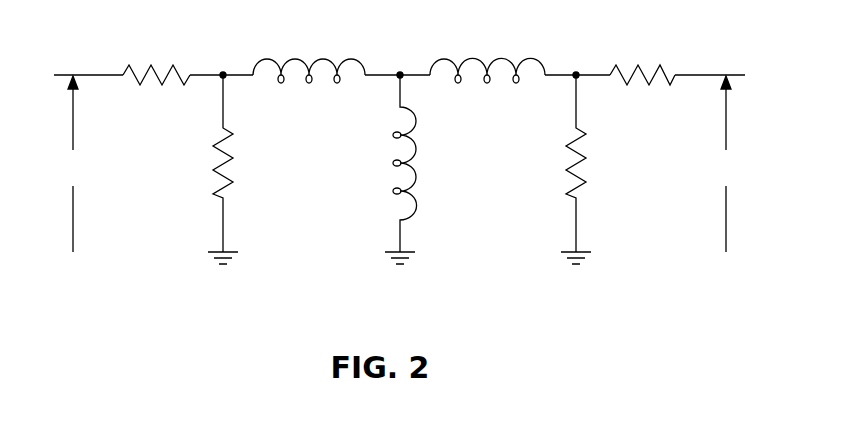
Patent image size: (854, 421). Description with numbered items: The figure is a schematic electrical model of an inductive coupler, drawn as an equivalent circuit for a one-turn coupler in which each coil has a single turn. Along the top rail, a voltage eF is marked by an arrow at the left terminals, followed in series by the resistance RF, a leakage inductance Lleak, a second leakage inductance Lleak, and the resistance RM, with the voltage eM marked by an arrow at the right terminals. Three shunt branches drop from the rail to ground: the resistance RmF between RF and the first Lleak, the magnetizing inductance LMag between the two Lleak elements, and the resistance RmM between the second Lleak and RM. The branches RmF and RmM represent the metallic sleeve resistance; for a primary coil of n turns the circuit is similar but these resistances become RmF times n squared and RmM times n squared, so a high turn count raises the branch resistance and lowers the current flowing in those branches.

The element RF is at (156, 56).
The element Lleak is at (409, 55).
The element RM is at (642, 56).
The metallic sleeve resistance RmF is at (192, 169).
The element LMag is at (367, 169).
The metallic sleeve resistance RmM is at (541, 169).
The element eF is at (74, 164).
The element eM is at (727, 164).